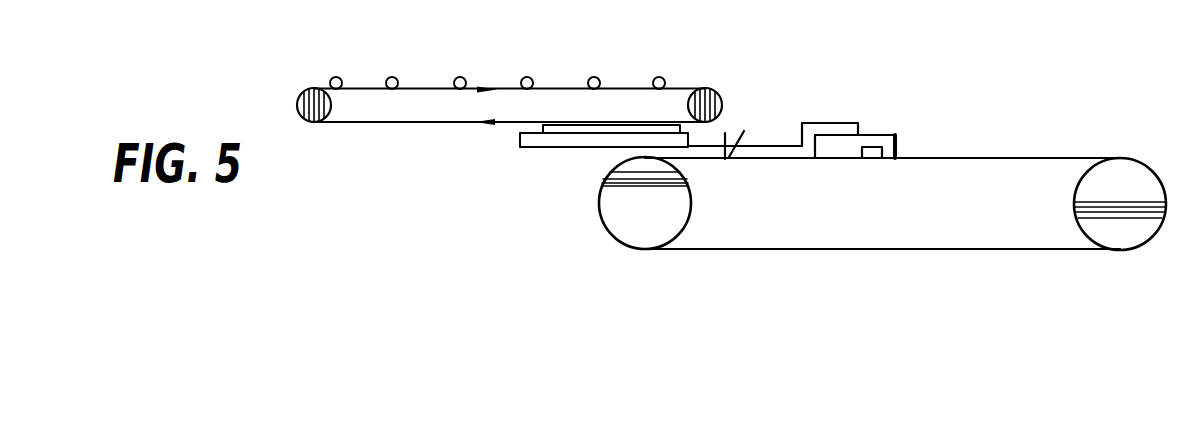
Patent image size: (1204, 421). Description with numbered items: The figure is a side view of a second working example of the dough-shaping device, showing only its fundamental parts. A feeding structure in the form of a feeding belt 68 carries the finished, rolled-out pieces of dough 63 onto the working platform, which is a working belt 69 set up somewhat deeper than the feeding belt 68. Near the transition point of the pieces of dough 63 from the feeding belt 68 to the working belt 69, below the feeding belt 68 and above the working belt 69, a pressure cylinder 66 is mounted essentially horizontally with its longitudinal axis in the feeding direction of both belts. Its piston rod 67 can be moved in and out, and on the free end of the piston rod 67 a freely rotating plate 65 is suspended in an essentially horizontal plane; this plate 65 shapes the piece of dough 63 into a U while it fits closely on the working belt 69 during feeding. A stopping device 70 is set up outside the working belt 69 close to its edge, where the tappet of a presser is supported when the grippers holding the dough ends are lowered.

The pieces of dough 63 is at (520, 87).
The freely rotating plate 65 is at (881, 135).
The pressure cylinder 66 is at (548, 147).
The piston rod 67 is at (760, 134).
The feeding belt 68 is at (382, 125).
The working belt 69 is at (967, 158).
The stopping device 70 is at (872, 153).